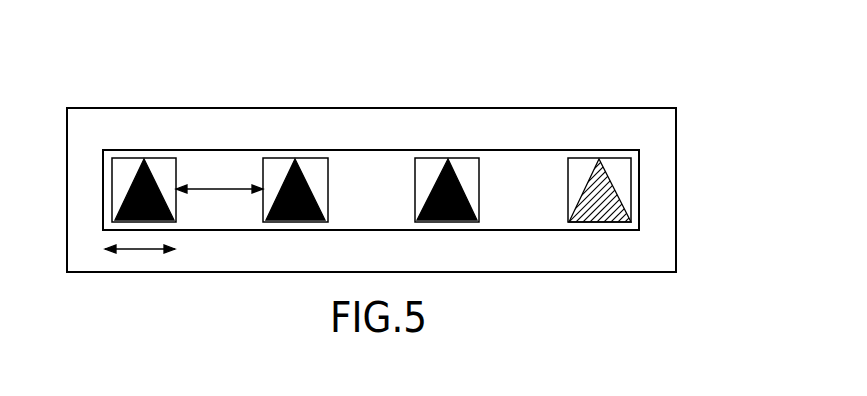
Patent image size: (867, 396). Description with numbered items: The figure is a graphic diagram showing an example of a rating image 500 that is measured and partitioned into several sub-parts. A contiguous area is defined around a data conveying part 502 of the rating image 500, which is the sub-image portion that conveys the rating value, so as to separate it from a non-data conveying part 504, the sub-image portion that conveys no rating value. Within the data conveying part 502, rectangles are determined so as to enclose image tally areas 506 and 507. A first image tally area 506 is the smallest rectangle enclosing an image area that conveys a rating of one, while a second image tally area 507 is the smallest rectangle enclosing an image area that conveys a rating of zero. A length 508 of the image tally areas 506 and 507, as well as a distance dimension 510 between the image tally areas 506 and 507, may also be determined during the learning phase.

The rating image 500 is at (676, 189).
The data conveying part 502 is at (368, 150).
The non-data conveying part 504 is at (308, 108).
The first image tally area 506 is at (415, 203).
The second image tally area 507 is at (567, 203).
The length 508 is at (140, 251).
The distance dimension 510 is at (220, 187).